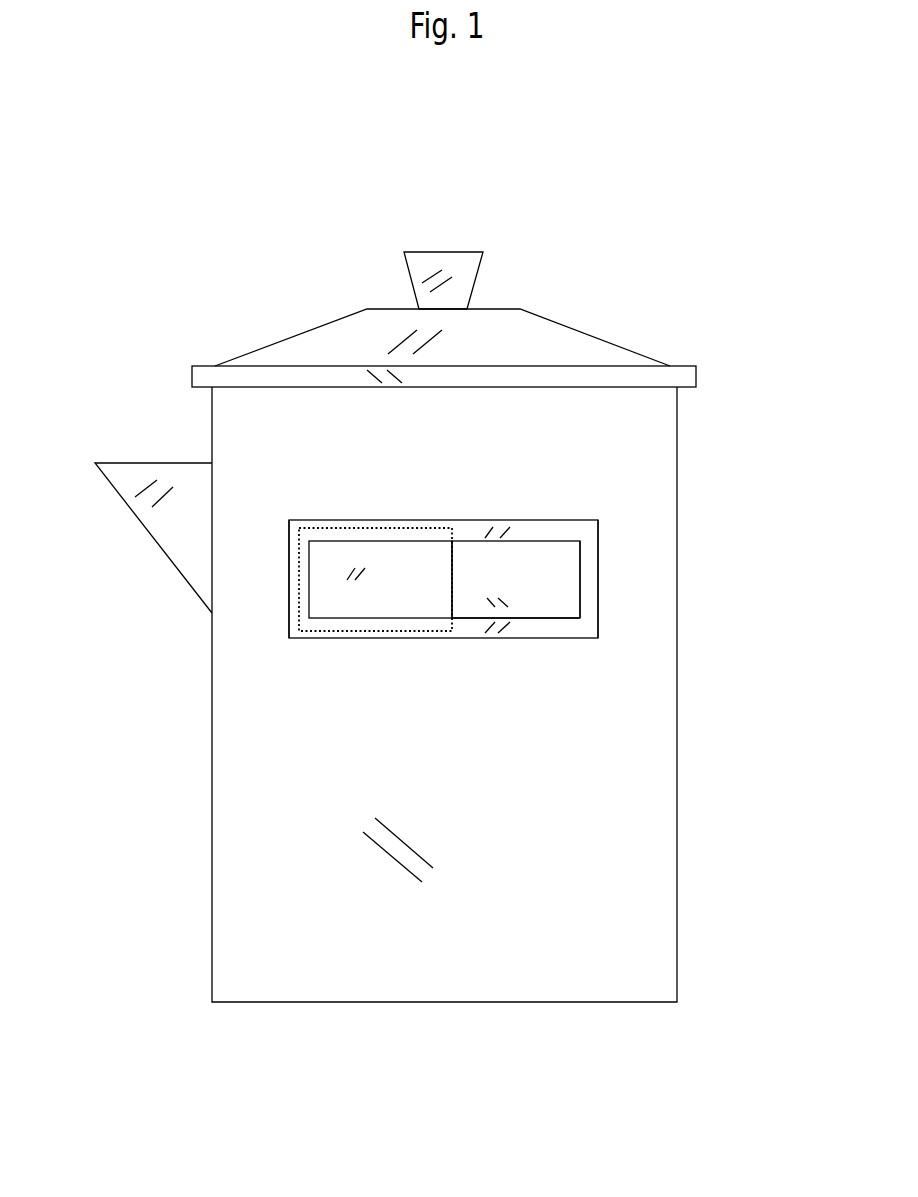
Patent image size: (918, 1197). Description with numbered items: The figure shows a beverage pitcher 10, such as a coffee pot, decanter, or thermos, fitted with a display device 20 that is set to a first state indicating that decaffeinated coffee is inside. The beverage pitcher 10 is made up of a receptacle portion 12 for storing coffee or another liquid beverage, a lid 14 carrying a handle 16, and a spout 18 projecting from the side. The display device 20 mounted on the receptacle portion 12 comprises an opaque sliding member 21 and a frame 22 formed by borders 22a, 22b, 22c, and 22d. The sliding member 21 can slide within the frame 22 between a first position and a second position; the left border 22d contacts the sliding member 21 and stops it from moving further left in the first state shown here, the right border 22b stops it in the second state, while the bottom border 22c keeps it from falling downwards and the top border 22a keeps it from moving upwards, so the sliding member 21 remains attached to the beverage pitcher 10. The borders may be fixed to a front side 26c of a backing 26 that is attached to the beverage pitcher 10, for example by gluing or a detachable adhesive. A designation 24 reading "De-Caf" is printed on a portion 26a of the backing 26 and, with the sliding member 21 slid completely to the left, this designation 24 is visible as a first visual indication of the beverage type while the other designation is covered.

The beverage pitcher 10 is at (590, 290).
The receptacle portion 12 is at (640, 598).
The lid 14 is at (362, 338).
The handle 16 is at (457, 263).
The spout 18 is at (133, 480).
The display device 20 is at (615, 505).
The sliding member 21 is at (398, 552).
The frame 22 is at (573, 528).
The frame portion 22a is at (522, 533).
The frame portion 22b is at (590, 580).
The frame portion 22c is at (457, 628).
The frame portion 22d is at (288, 578).
The designation 24 is at (552, 600).
The backing 26 is at (538, 603).
The portion of the backing 26a is at (567, 600).
The front side of the backing 26c is at (463, 612).